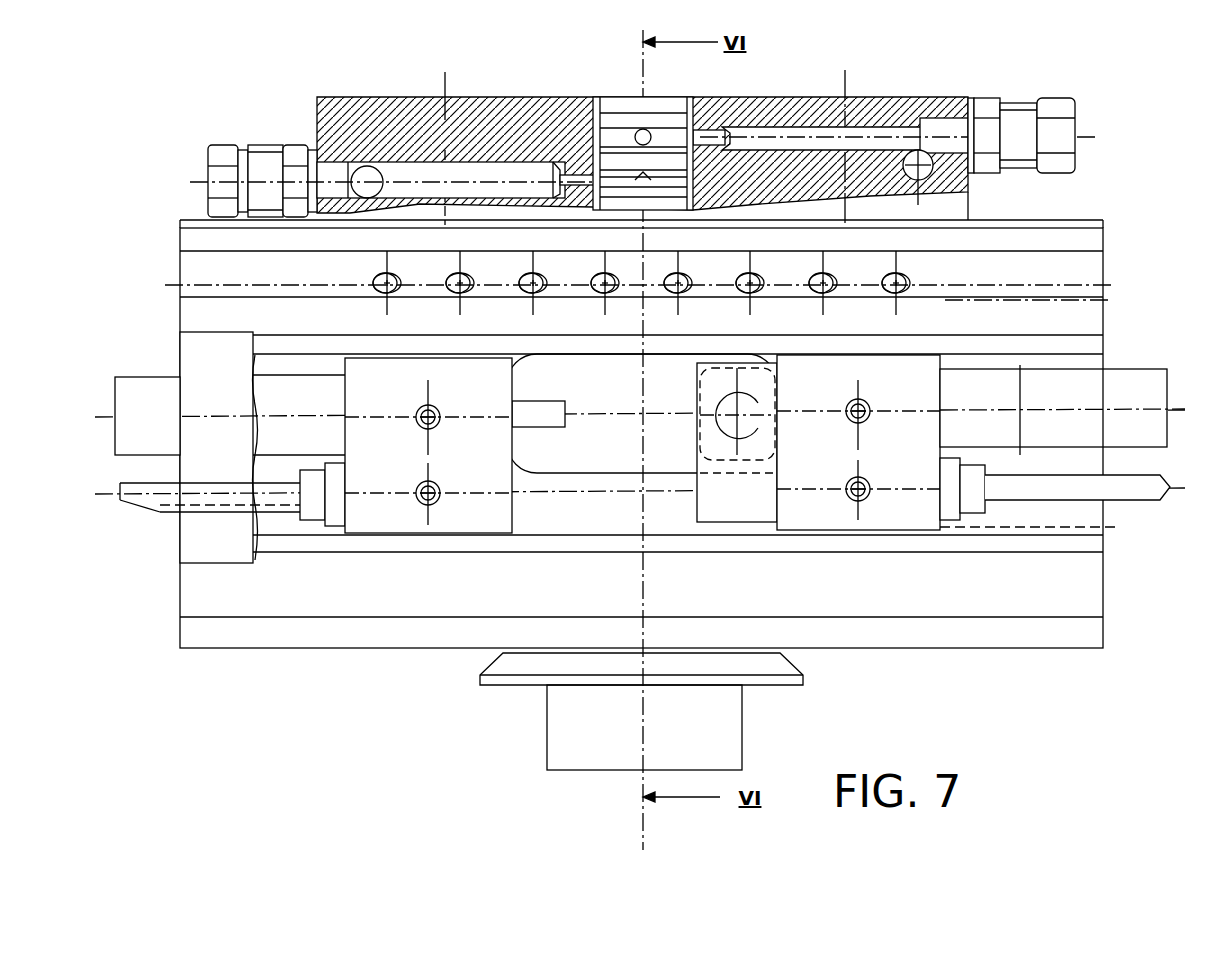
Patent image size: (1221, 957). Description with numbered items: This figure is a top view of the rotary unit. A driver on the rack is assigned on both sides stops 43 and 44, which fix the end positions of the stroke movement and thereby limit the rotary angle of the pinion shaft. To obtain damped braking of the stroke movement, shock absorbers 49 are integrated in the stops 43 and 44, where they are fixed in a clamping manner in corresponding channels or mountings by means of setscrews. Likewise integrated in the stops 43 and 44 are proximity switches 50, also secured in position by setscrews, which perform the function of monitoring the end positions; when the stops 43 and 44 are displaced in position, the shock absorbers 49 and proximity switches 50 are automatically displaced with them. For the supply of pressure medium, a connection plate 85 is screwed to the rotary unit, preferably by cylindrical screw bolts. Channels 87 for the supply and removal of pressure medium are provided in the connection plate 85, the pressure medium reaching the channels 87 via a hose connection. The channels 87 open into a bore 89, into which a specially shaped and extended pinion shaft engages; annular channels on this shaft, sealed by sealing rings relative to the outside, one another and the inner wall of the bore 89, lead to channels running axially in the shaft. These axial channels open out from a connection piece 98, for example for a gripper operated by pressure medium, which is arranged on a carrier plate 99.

The stop 43 is at (880, 527).
The stop 44 is at (437, 537).
The shock absorber 49 is at (1027, 430).
The proximity switch 50 is at (331, 522).
The connection plate 85 is at (517, 107).
The channel 87 is at (565, 140).
The bore 89 is at (598, 100).
The connection piece 98 is at (720, 713).
The carrier plate 99 is at (760, 668).